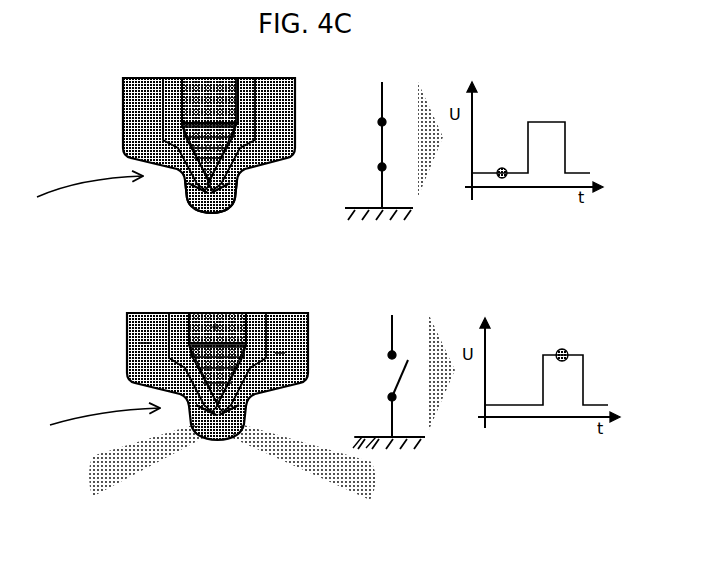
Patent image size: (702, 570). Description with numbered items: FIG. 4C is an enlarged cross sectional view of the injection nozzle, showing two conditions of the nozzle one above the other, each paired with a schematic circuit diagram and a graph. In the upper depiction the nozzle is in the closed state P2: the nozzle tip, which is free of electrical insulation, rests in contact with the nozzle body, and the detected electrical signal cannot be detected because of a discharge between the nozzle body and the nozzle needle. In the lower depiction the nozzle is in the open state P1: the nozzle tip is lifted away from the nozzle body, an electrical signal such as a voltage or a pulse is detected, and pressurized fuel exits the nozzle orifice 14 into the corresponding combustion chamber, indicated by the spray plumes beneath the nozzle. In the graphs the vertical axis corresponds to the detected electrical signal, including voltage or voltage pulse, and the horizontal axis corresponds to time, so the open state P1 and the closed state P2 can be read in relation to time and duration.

The nozzle orifice 14 is at (178, 190).
The open state P1 is at (90, 432).
The closed state P2 is at (71, 195).